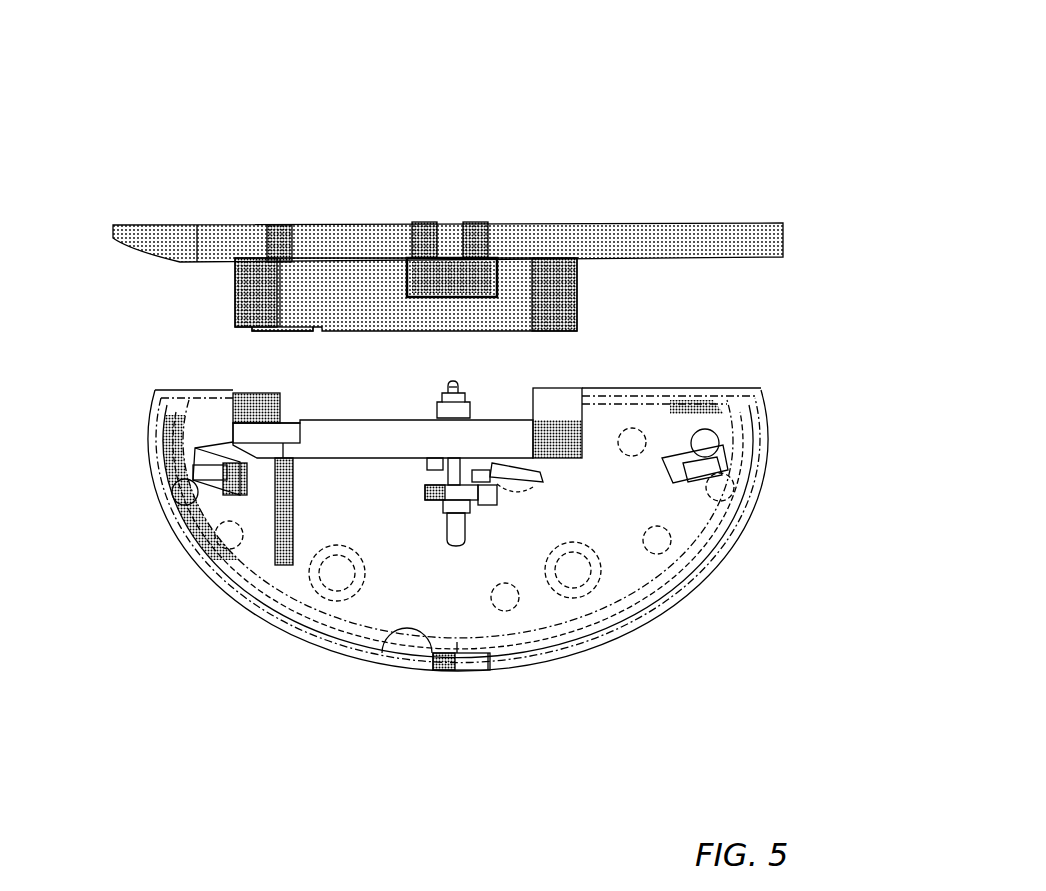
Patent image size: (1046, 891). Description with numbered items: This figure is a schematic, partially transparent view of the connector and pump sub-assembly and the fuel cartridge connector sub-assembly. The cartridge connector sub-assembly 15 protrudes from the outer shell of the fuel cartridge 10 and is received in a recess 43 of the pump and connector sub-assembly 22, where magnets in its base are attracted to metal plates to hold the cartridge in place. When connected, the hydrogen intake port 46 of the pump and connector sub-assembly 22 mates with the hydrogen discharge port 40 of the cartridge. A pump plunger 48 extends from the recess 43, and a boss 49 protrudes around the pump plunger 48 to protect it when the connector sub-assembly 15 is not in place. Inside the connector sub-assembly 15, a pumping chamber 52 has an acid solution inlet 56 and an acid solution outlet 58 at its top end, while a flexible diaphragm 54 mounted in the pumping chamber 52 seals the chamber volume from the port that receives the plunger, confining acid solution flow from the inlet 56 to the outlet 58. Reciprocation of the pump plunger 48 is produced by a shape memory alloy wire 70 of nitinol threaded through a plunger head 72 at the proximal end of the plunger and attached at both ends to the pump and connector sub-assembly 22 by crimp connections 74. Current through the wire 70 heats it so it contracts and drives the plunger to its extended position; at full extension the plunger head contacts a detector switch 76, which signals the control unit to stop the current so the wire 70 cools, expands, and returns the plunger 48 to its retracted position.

The fuel cartridge 10 is at (722, 228).
The cartridge connector sub-assembly 15 is at (547, 306).
The pump and connector sub-assembly 22 is at (673, 428).
The hydrogen discharge port 40 is at (273, 328).
The recess 43 is at (514, 395).
The hydrogen intake port 46 is at (273, 522).
The pump plunger 48 is at (440, 382).
The boss 49 is at (437, 412).
The pumping chamber 52 is at (425, 272).
The flexible diaphragm 54 is at (473, 290).
The acid solution inlet 56 is at (427, 223).
The acid solution outlet 58 is at (478, 223).
The shape memory alloy wire 70 is at (340, 510).
The plunger head 72 is at (463, 533).
The crimp connections 74 is at (225, 490).
The detector switch 76 is at (542, 483).